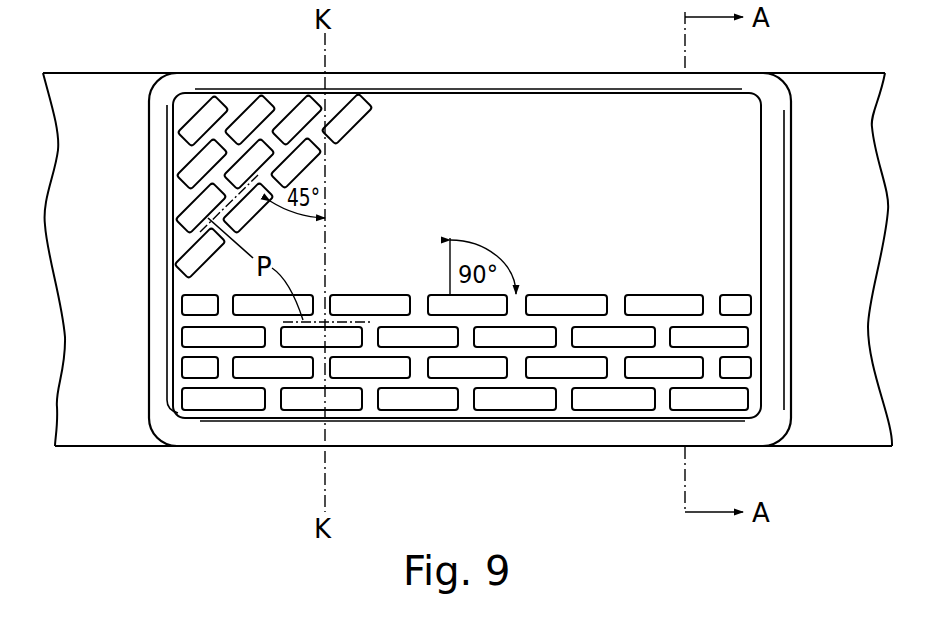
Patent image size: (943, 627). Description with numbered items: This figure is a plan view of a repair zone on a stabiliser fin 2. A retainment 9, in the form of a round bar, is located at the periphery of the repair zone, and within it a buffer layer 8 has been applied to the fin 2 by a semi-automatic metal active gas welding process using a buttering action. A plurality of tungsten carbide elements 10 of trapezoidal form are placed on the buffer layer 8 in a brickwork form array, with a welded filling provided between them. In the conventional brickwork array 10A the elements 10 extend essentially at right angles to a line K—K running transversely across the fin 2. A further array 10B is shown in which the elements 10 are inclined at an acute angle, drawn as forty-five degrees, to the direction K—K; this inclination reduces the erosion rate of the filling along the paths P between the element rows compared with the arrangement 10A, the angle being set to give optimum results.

The fin 2 is at (842, 236).
The buffer layer 8 is at (570, 205).
The retainment 9 is at (594, 82).
The tungsten carbide elements 10 is at (255, 113).
The conventional brickwork array 10A is at (692, 292).
The inclined array 10B is at (357, 139).